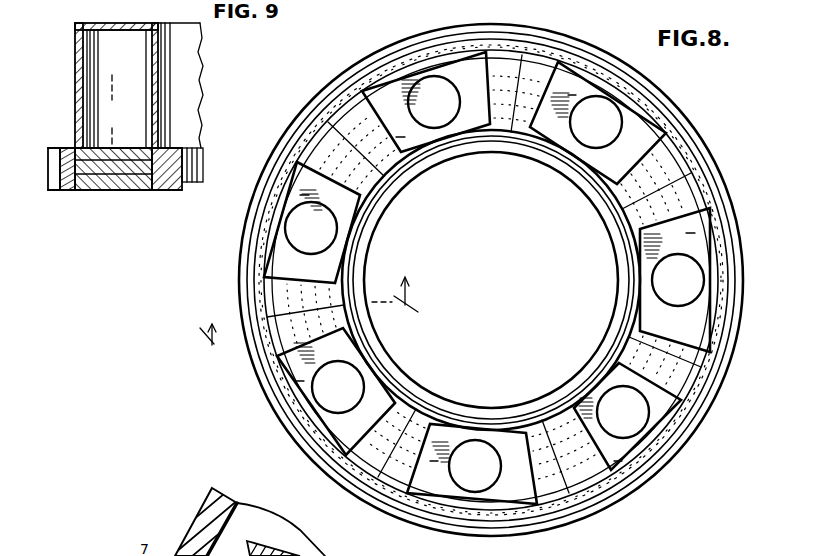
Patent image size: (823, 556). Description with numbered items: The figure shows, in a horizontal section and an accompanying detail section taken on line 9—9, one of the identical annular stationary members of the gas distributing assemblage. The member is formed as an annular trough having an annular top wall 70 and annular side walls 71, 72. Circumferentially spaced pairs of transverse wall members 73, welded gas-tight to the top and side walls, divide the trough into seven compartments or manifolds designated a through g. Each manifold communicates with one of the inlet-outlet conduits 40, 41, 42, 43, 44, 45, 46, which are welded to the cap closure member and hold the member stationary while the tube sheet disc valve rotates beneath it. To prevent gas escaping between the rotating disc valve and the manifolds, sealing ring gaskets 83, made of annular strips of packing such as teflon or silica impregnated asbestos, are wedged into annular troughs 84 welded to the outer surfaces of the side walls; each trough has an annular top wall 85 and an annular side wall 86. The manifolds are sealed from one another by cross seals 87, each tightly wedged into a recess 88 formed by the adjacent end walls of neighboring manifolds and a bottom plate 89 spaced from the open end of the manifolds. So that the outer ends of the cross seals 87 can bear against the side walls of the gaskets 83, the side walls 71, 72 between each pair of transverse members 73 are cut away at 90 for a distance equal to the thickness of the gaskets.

In FIG. 8, the section line 9— 9 is at (309, 318).
In FIG. 8, the upper inlet-outlet conduit 40 is at (704, 279).
In FIG. 8, the upper inlet-outlet conduit 41 is at (618, 104).
In FIG. 8, the upper inlet-outlet conduit 42 is at (430, 76).
In FIG. 8, the upper inlet-outlet conduit 43 is at (292, 232).
In FIG. 8, the upper inlet-outlet conduit 44 is at (322, 406).
In FIG. 8, the upper inlet-outlet conduit 45 is at (473, 494).
In FIG. 8, the upper inlet-outlet conduit 46 is at (649, 418).
In FIG. 9, the annular top wall 70 is at (122, 28).
In FIG. 9, the annular side wall 71 is at (75, 82).
In FIG. 8, the annular side wall 71 is at (452, 58).
In FIG. 9, the annular side wall 72 is at (152, 106).
In FIG. 8, the annular side wall 72 is at (381, 371).
In FIG. 9, the wall member 73 is at (138, 63).
In FIG. 8, the wall member 73 is at (474, 132).
In FIG. 9, the sealing ring gasket 83 is at (70, 192).
In FIG. 8, the sealing ring gasket 83 is at (585, 371).
In FIG. 9, the annular trough 84 is at (47, 145).
In FIG. 8, the annular trough 84 is at (244, 268).
In FIG. 9, the annular top wall 85 is at (65, 148).
In FIG. 9, the annular side wall 86 is at (50, 178).
In FIG. 9, the cross seal 87 is at (106, 192).
In FIG. 8, the cross seal 87 is at (530, 48).
In FIG. 8, the recess 88 is at (565, 55).
In FIG. 9, the bottom plate 89 is at (130, 146).
In FIG. 9, the cut-away portion 90 is at (136, 192).